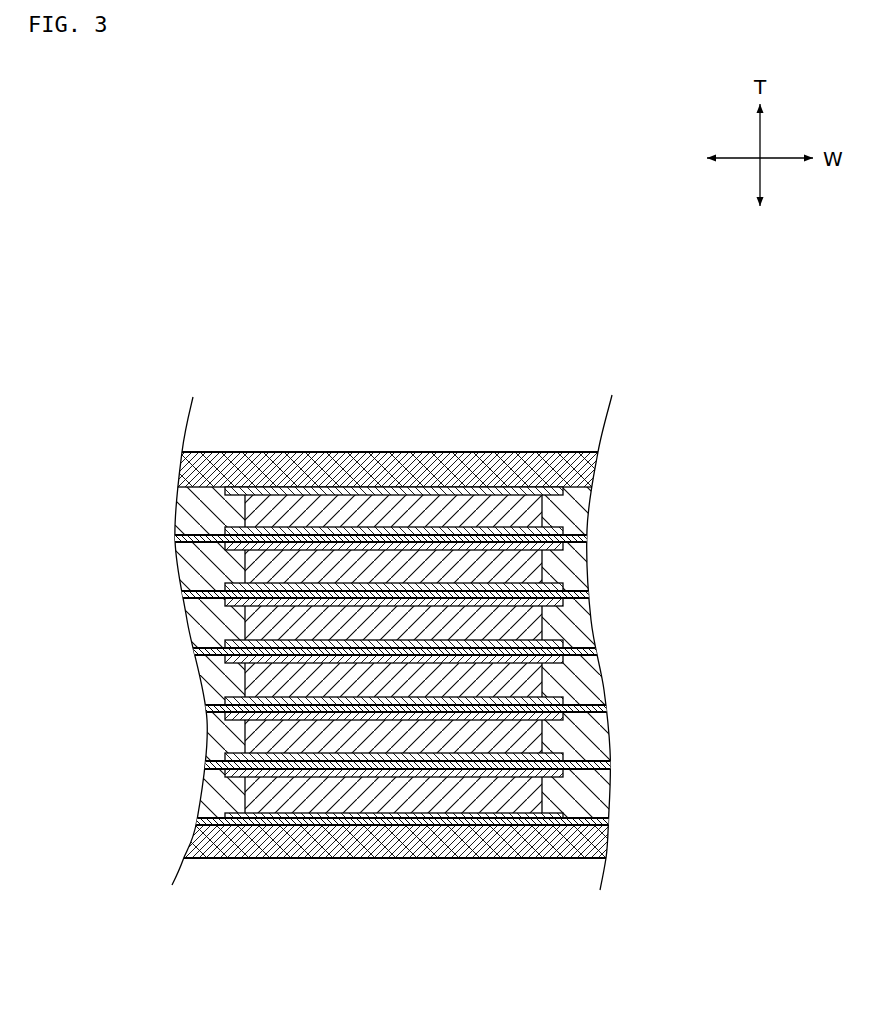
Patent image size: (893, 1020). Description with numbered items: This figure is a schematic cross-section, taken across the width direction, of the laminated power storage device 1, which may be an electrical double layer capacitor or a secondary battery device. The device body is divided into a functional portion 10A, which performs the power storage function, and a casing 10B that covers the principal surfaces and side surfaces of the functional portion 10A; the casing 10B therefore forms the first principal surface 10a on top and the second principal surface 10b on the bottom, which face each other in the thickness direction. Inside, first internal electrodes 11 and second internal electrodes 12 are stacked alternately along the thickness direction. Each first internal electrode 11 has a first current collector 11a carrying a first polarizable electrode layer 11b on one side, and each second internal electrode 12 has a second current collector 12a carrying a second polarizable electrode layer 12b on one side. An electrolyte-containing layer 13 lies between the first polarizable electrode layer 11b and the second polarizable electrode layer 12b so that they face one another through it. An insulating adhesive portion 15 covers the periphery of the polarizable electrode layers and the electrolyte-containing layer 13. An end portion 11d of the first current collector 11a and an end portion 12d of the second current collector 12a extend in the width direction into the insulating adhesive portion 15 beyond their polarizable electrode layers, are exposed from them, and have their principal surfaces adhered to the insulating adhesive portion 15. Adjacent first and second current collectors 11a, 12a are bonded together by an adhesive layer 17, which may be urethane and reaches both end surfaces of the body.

The laminated power storage device 1 is at (556, 314).
The functional portion 10A is at (455, 487).
The casing 10B is at (256, 861).
The first principal surface 10a is at (407, 452).
The second principal surface 10b is at (330, 858).
The first internal electrode 11 is at (355, 360).
The first current collector 11a is at (271, 536).
The first polarizable electrode layer 11b is at (342, 553).
The end portion 11d is at (604, 702).
The second internal electrode 12 is at (390, 898).
The second current collector 12a is at (522, 927).
The second polarizable electrode layer 12b is at (530, 825).
The end portion 12d is at (566, 651).
The electrolyte-containing layer 13 is at (476, 551).
The insulating adhesive portion 15 is at (562, 490).
The adhesive layer 17 is at (188, 527).